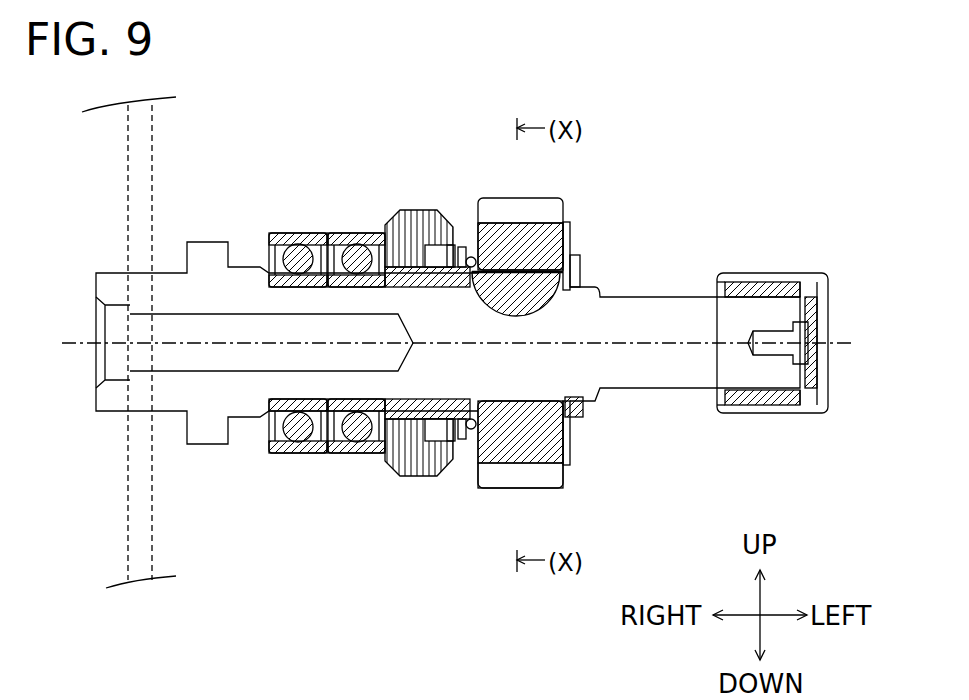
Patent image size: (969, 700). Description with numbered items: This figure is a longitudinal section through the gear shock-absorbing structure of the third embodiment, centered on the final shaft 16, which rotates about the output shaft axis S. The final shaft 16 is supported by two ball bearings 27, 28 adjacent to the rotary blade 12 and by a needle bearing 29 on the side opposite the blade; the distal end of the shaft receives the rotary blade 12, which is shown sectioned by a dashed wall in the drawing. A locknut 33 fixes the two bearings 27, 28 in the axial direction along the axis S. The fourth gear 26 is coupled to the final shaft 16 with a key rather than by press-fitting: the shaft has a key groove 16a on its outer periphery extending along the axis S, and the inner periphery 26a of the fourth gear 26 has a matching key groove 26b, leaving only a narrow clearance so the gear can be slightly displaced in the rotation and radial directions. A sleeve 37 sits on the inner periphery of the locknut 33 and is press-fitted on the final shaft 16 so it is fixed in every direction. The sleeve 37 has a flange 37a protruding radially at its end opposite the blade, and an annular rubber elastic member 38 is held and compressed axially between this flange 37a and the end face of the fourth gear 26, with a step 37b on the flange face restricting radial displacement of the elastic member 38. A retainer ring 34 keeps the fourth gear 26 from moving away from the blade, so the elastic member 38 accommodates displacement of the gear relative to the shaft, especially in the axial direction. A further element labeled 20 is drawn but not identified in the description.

The rotary blade 12 is at (126, 503).
The final shaft 16 is at (688, 314).
The final-shaft key groove 16a is at (548, 306).
The drive shaft 20 is at (308, 166).
The fourth gear 26 is at (577, 243).
The inner periphery 26a is at (571, 438).
The final-gear key groove 26b is at (585, 287).
The bearing 27 is at (296, 452).
The bearing 28 is at (356, 443).
The bearing 29 is at (779, 406).
The locknut 33 is at (400, 478).
The retainer ring 34 is at (582, 416).
The sleeve 37 is at (392, 210).
The flange 37a is at (452, 244).
The step 37b is at (470, 248).
The elastic member 38 is at (470, 430).
The output shaft axis S is at (448, 345).